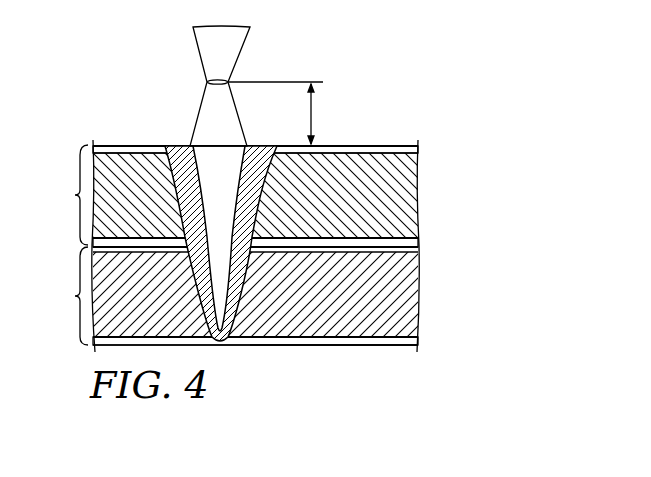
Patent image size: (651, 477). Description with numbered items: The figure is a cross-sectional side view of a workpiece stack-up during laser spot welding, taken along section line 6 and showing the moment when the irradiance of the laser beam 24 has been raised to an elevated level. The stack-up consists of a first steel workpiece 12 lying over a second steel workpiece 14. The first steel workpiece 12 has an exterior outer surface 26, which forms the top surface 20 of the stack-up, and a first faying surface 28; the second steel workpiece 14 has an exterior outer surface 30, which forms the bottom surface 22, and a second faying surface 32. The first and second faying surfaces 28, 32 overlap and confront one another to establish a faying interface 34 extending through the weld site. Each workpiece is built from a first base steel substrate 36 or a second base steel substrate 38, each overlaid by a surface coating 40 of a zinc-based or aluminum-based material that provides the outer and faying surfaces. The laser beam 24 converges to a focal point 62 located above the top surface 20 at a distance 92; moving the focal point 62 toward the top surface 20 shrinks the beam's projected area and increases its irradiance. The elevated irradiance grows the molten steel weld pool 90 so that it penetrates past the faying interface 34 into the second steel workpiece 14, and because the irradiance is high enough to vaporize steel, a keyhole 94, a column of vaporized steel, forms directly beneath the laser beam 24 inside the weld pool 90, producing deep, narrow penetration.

The first steel workpiece 12 is at (77, 195).
The second steel workpiece 14 is at (77, 296).
The top surface 20 is at (343, 146).
The bottom surface 22 is at (302, 346).
The laser beam 24 is at (203, 42).
The exterior outer surface 26 is at (383, 146).
The first faying surface 28 is at (290, 247).
The exterior outer surface 30 is at (385, 346).
The second faying surface 32 is at (326, 254).
The faying interface 34 is at (165, 256).
The first base steel substrate 36 is at (405, 188).
The second base steel substrate 38 is at (395, 300).
The surface coating 40 is at (410, 150).
The focal point 62 is at (215, 80).
The molten steel weld pool 90 is at (178, 195).
The distance 92 is at (313, 100).
The keyhole 94 is at (208, 202).
The section line 6- 6 is at (157, 93).